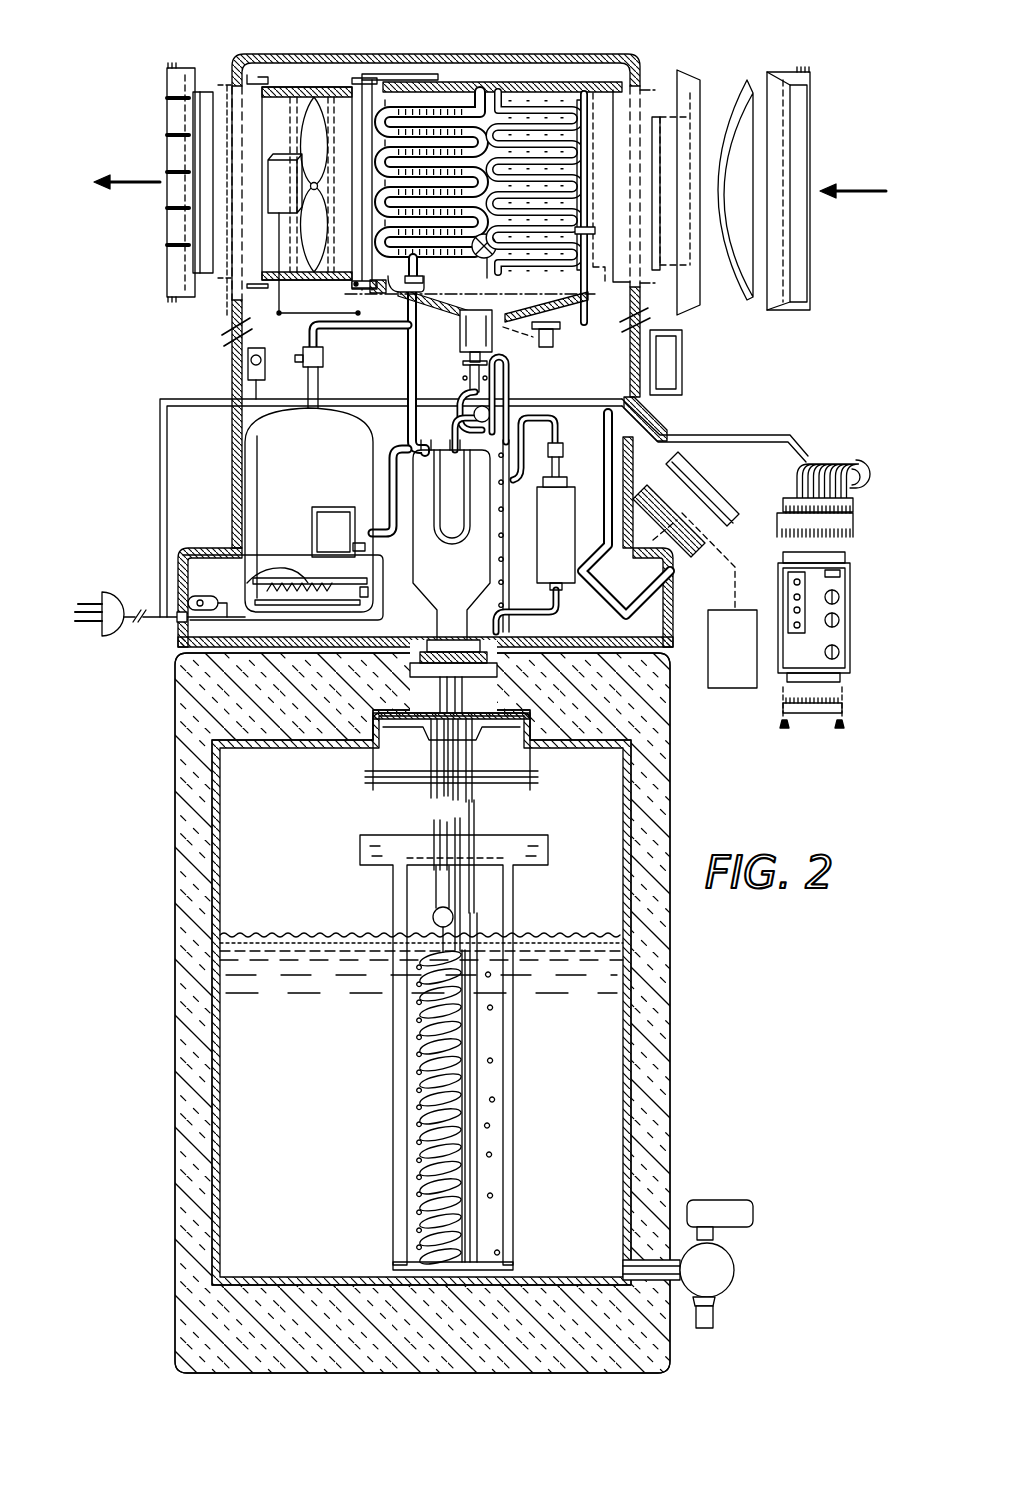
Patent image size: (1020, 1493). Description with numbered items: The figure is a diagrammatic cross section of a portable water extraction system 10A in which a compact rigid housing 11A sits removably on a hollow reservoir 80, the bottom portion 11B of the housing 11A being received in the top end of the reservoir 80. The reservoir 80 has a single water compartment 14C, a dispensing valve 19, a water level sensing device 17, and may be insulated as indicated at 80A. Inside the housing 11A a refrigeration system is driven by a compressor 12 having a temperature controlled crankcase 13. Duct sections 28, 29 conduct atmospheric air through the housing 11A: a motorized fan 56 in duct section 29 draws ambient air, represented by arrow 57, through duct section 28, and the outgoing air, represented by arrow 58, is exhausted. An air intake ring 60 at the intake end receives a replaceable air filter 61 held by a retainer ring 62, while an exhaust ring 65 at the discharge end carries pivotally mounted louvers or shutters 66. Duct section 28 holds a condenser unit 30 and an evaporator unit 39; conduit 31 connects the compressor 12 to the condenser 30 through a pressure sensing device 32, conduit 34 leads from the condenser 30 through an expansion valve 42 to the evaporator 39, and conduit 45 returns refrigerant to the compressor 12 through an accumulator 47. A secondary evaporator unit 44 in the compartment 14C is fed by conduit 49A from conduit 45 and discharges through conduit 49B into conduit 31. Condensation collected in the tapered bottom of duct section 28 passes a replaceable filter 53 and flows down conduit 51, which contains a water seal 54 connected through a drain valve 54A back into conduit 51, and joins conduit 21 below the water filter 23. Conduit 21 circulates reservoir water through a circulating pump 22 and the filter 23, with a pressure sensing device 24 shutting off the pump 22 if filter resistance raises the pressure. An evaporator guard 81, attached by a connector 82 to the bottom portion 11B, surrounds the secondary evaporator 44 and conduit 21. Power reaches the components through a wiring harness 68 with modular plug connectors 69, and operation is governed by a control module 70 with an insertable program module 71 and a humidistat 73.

The exhaust ring 65 is at (213, 42).
The housing 11A is at (289, 54).
The duct section 29 is at (280, 82).
The motorized blower or fan 56 is at (327, 117).
The condenser unit 30 is at (418, 110).
The conduit 34 is at (480, 108).
The duct section 28 is at (532, 82).
The evaporator unit 39 is at (578, 102).
The conduit 45 is at (586, 138).
The air intake ring 60 is at (690, 70).
The air filter 61 is at (750, 88).
The retainer ring 62 is at (773, 72).
The outgoing air 58 is at (106, 190).
The louvers or shutters 66 is at (168, 226).
The ambient air 57 is at (844, 197).
The humidistat 73 is at (362, 288).
The expansion valve 42 is at (562, 301).
The conduit 31 is at (346, 326).
The pressure sensing device 32 is at (323, 360).
The replaceable filter 53 is at (560, 328).
The conduit 51 is at (492, 365).
The drain valve 54A is at (512, 372).
The water seal 54 is at (458, 410).
The wiring harness 68 is at (160, 458).
The compressor 12 is at (323, 478).
The accumulator 47 is at (466, 517).
The conduit 49A is at (451, 540).
The pressure sensing device 24 is at (563, 452).
The circulating pump 22 is at (573, 534).
The modular plug connectors 69 is at (787, 500).
The temperature controlled crankcase 13 is at (250, 583).
The replaceable filter 23 is at (644, 594).
The control module 70 is at (778, 604).
The conduit 21 is at (560, 590).
The conduit 49B is at (418, 590).
The water extraction system 10A is at (176, 640).
The removable program module 71 is at (818, 716).
The bottom portion 11B is at (268, 748).
The connector 82 is at (540, 768).
The insulation 80A is at (183, 905).
The water level sensing device 17 is at (436, 912).
The water compartment 14C is at (326, 1088).
The secondary evaporator unit 44 is at (420, 1165).
The evaporator guard 81 is at (512, 1150).
The reservoir 80 is at (672, 1030).
The dispensing valve 19 is at (715, 1200).